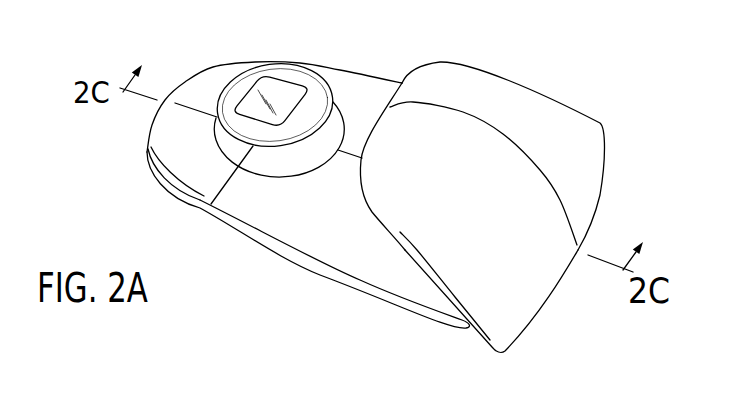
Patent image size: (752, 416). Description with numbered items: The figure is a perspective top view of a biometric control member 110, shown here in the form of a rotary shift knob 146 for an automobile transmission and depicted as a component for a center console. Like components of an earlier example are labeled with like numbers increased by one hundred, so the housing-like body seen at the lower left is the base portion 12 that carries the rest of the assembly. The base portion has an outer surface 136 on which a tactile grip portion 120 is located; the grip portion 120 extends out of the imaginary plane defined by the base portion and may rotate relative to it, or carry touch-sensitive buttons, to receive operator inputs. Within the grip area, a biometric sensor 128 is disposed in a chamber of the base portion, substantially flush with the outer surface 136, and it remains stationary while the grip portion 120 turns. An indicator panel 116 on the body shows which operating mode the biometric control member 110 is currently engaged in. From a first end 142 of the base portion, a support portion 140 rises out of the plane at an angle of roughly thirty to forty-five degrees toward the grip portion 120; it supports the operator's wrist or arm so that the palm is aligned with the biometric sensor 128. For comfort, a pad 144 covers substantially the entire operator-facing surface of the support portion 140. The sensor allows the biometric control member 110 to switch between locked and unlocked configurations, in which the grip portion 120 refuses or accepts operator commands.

The housing 12 is at (308, 195).
The biometric control member 110 is at (494, 187).
The indicator panel 116 is at (162, 153).
The grip portion 120 is at (282, 77).
The biometric sensor 128 is at (271, 70).
The outer surface 136 is at (366, 90).
The support portion 140 is at (358, 168).
The first end 142 is at (539, 272).
The pad 144 is at (497, 136).
The rotary shift knob 146 is at (256, 91).